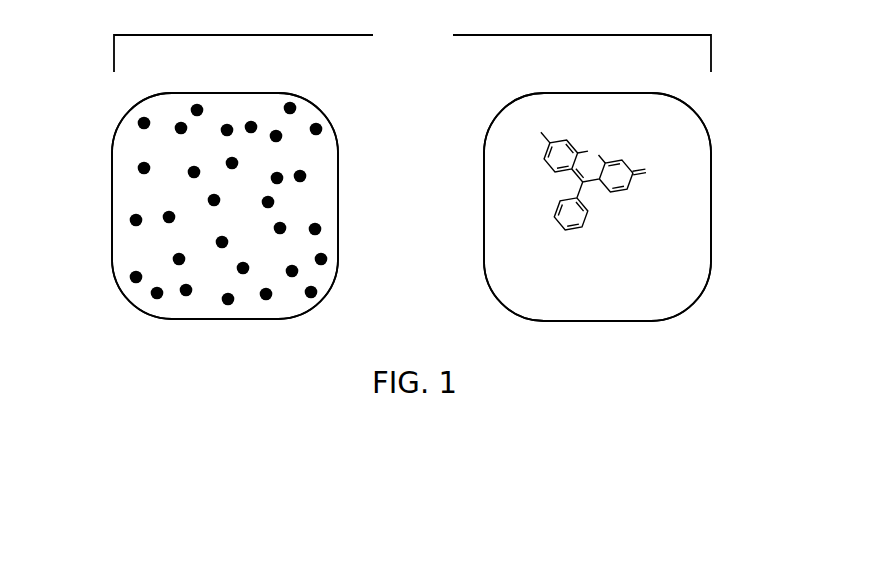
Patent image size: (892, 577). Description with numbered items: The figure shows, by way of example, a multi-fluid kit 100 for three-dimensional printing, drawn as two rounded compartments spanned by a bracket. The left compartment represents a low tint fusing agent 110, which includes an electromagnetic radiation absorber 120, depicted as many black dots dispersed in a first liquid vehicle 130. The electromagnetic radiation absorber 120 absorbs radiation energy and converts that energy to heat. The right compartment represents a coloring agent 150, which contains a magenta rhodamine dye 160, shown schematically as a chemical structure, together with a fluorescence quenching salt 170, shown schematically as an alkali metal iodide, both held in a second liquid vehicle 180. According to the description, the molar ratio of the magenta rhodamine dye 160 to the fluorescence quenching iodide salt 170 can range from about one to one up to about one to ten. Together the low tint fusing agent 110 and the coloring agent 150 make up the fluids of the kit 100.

The multi-fluid kit 100 is at (393, 41).
The low tint fusing agent 110 is at (243, 352).
The electromagnetic radiation absorber 120 is at (133, 218).
The first liquid vehicle 130 is at (137, 143).
The coloring agent 150 is at (582, 353).
The magenta rhodamine dye 160 is at (522, 168).
The fluorescence quenching salt 170 is at (684, 262).
The second liquid vehicle 180 is at (690, 193).